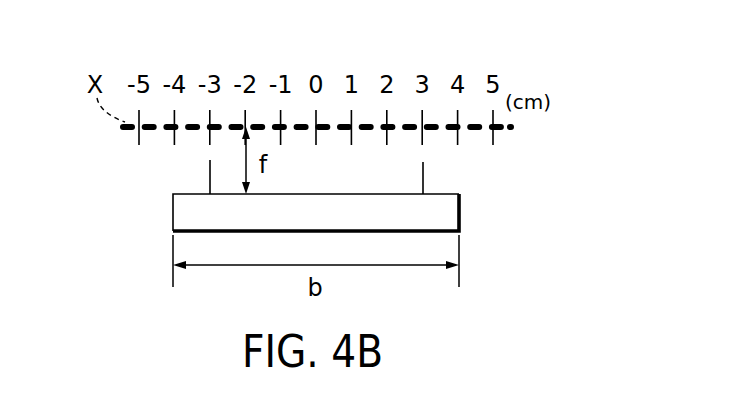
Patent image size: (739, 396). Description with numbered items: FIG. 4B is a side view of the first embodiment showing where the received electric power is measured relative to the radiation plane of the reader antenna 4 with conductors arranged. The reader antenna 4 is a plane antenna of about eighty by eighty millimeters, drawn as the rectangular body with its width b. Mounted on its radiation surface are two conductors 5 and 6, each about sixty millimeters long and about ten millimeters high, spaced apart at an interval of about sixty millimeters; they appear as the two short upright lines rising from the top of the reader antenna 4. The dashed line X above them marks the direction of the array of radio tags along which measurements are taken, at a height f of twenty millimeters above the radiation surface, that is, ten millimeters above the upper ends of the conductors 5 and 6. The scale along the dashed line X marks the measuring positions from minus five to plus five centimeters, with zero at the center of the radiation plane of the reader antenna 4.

The reader antenna 4 is at (462, 213).
The conductor 5 is at (208, 181).
The conductor 6 is at (427, 180).